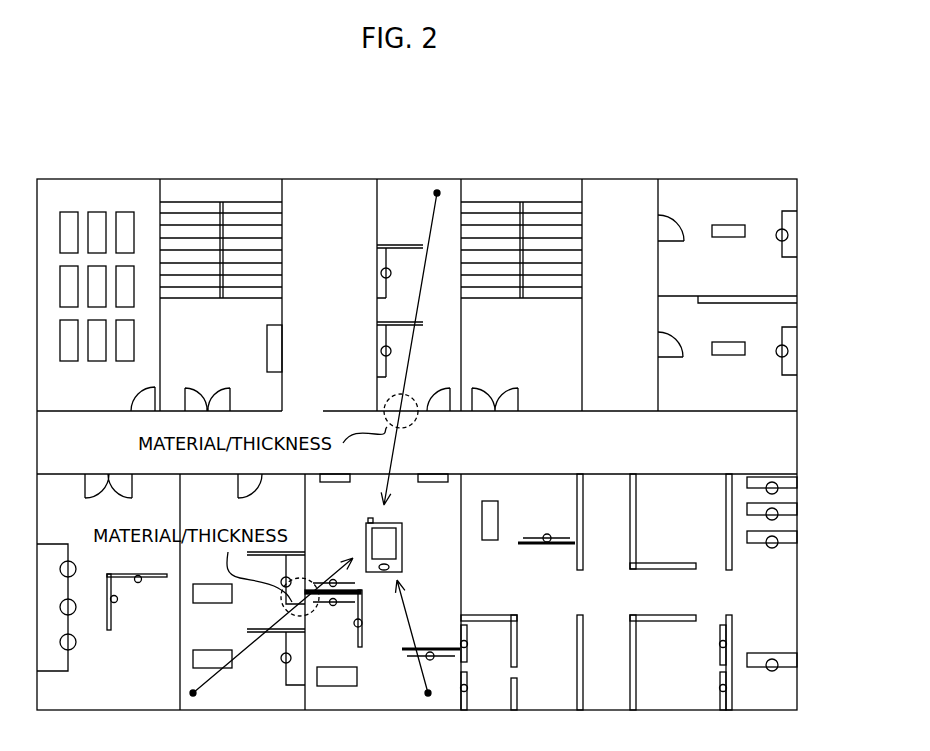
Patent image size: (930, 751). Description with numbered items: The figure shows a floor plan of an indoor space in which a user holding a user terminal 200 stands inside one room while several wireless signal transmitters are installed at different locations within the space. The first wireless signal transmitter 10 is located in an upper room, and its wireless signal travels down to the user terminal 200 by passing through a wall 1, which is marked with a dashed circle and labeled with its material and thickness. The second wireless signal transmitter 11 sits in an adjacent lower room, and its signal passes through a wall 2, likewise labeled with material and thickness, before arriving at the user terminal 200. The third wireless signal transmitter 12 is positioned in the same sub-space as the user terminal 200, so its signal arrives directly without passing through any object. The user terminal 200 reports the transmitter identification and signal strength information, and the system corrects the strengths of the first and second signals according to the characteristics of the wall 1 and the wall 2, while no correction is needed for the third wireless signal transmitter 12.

The wall 1 is at (418, 422).
The wall 2 is at (307, 612).
The first wireless signal transmitter 10 is at (437, 193).
The second wireless signal transmitter 11 is at (193, 693).
The third wireless signal transmitter 12 is at (428, 693).
The user terminal 200 is at (386, 522).